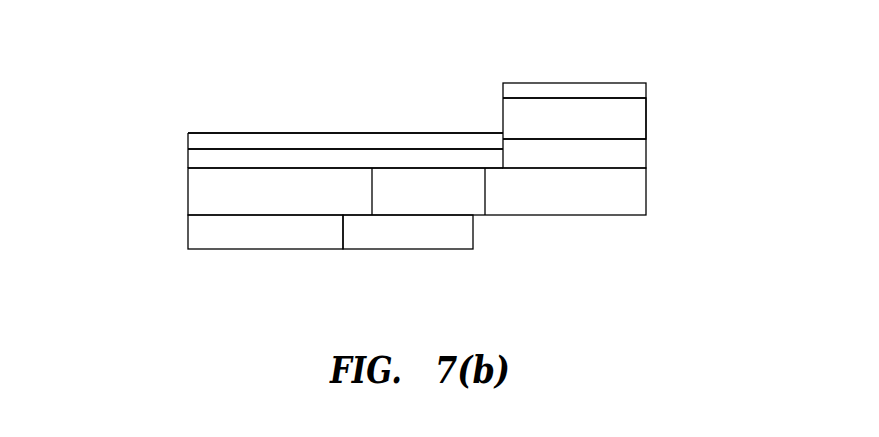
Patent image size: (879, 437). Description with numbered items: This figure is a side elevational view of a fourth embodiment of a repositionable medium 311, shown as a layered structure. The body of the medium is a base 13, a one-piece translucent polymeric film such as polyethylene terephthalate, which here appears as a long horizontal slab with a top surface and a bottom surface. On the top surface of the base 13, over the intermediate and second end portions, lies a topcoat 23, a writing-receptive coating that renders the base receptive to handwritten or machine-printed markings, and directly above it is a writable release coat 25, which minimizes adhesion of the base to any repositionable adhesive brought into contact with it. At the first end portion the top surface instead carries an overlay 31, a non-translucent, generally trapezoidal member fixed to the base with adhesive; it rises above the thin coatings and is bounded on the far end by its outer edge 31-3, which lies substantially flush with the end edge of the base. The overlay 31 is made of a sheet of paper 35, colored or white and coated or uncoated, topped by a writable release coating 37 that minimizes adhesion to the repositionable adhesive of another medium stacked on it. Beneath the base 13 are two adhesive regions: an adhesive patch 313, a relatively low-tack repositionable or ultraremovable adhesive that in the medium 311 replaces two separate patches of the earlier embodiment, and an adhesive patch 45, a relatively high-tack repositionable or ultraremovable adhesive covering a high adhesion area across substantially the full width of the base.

The base 13 is at (180, 193).
The topcoat 23 is at (222, 158).
The writable release coat 25 is at (287, 142).
The repositionable medium 311 is at (372, 100).
The overlay 31 is at (497, 97).
The writable release coating 37 is at (575, 83).
The outer edge 31-3 is at (646, 103).
The sheet of paper 35 is at (618, 117).
The adhesive patch 313 is at (263, 232).
The adhesive patch 45 is at (440, 235).